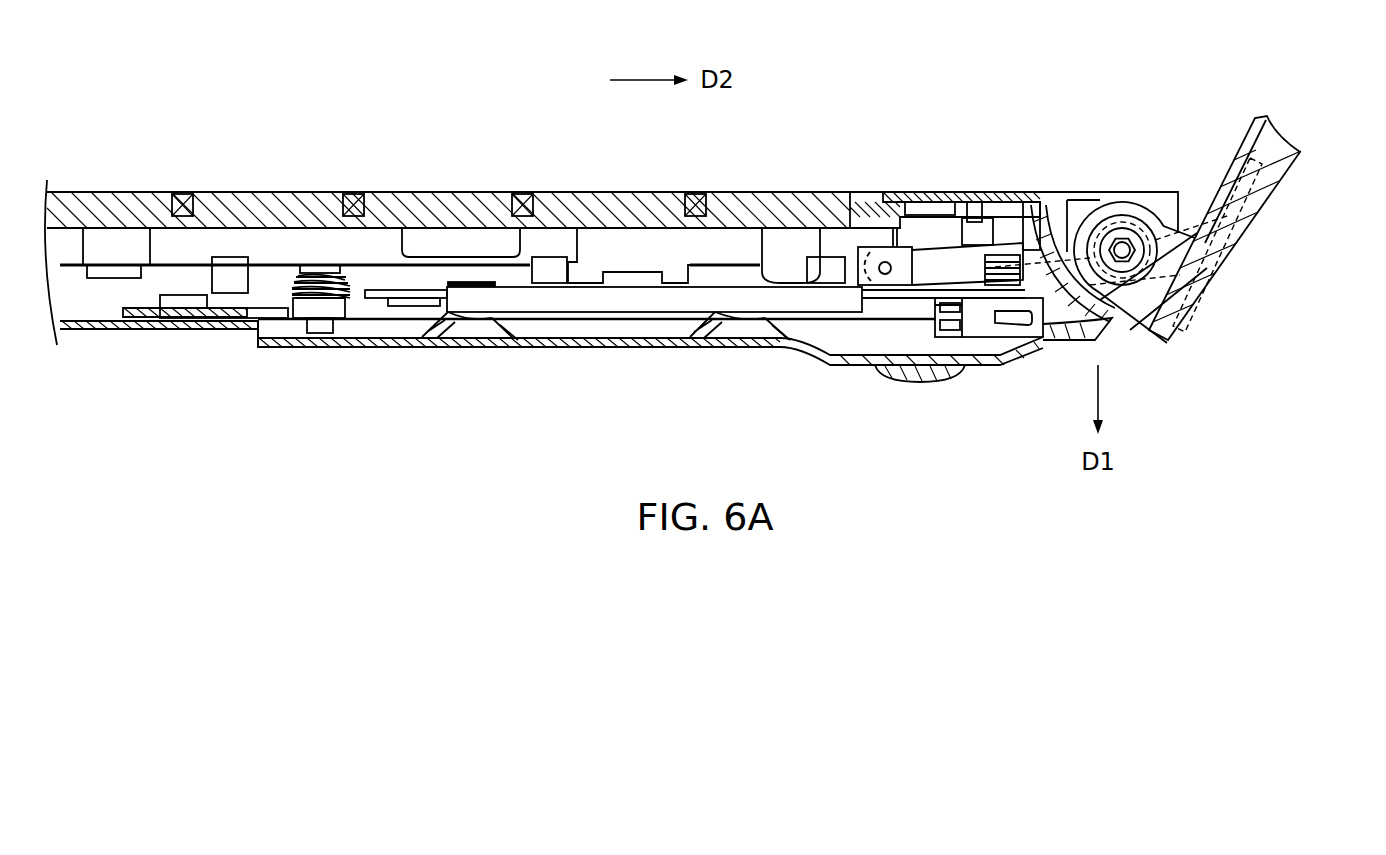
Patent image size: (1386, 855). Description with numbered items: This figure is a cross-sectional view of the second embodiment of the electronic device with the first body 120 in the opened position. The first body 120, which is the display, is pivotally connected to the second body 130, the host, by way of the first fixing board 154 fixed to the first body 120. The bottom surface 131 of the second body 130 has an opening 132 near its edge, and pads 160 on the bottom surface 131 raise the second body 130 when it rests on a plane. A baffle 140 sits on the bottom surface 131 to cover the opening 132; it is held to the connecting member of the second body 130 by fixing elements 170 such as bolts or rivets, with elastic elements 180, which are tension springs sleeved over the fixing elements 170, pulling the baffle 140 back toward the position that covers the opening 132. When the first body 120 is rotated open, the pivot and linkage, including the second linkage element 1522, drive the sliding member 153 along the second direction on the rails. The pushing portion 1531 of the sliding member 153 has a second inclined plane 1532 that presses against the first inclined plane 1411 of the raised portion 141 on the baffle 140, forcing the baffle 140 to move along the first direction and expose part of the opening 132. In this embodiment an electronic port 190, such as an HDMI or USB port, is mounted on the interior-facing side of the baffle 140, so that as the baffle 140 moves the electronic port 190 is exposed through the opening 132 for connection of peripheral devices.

The first body 120 is at (1295, 170).
The second body 130 is at (93, 205).
The bottom surface 131 is at (105, 340).
The opening 132 is at (1099, 333).
The baffle 140 is at (1050, 340).
The raised portion 141 is at (470, 347).
The first inclined plane 1411 is at (516, 330).
The sliding member 153 is at (410, 297).
The pushing portion 1531 is at (482, 303).
The second inclined plane 1532 is at (440, 318).
The second linkage element 1522 is at (932, 255).
The first fixing board 154 is at (1228, 262).
The pad 160 is at (922, 372).
The fixing element 170 is at (325, 262).
The elastic element 180 is at (295, 272).
The electronic port 190 is at (975, 325).